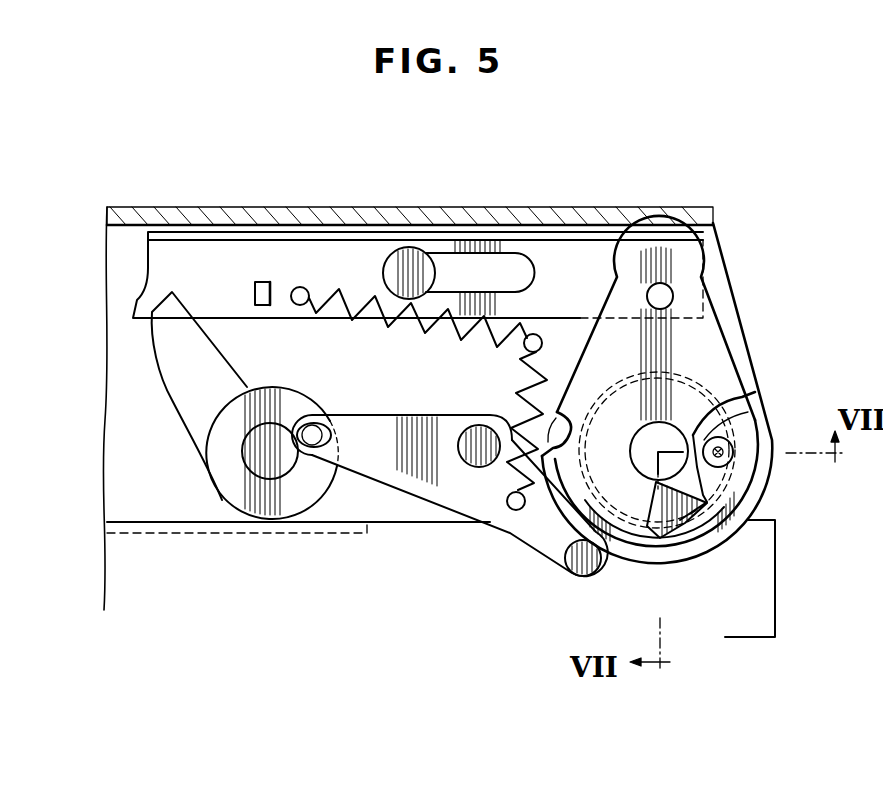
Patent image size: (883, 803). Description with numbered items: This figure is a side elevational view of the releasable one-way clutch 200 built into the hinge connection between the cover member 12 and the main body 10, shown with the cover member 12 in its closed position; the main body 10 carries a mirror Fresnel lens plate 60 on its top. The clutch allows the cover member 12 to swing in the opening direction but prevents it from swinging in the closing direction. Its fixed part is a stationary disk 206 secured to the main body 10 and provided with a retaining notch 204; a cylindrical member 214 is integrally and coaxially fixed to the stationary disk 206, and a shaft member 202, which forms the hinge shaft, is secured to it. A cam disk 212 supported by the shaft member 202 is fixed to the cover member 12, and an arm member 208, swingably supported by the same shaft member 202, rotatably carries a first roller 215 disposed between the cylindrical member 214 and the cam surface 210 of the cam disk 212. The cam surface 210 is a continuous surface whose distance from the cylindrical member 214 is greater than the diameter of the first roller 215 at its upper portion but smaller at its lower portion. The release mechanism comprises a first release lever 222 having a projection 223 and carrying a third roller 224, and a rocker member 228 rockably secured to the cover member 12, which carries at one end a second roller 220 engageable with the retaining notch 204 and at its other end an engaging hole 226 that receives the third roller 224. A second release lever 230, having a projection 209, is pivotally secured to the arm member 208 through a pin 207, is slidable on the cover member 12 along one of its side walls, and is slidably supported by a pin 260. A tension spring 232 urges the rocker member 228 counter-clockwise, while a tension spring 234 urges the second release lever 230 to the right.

The main body 10 is at (763, 542).
The cover member 12 is at (670, 216).
The mirror Fresnel lens plate 60 is at (215, 522).
The one-way clutch 200 is at (675, 566).
The shaft member 202 is at (647, 462).
The retaining notch 204 is at (553, 432).
The stationary disk 206 is at (719, 536).
The pin 207 is at (672, 291).
The arm member 208 is at (712, 338).
The projection 209 is at (254, 291).
The cam surface 210 is at (722, 476).
The cam disk 212 is at (708, 499).
The cylindrical member 214 is at (737, 420).
The first roller 215 is at (733, 451).
The second roller 220 is at (587, 578).
The first release lever 222 is at (218, 478).
The projection 223 is at (172, 378).
The third roller 224 is at (314, 430).
The engaging hole 226 is at (334, 452).
The rocker member 228 is at (407, 413).
The second release lever 230 is at (548, 254).
The tension spring 232 is at (478, 486).
The tension spring 234 is at (341, 293).
The pin 260 is at (410, 248).